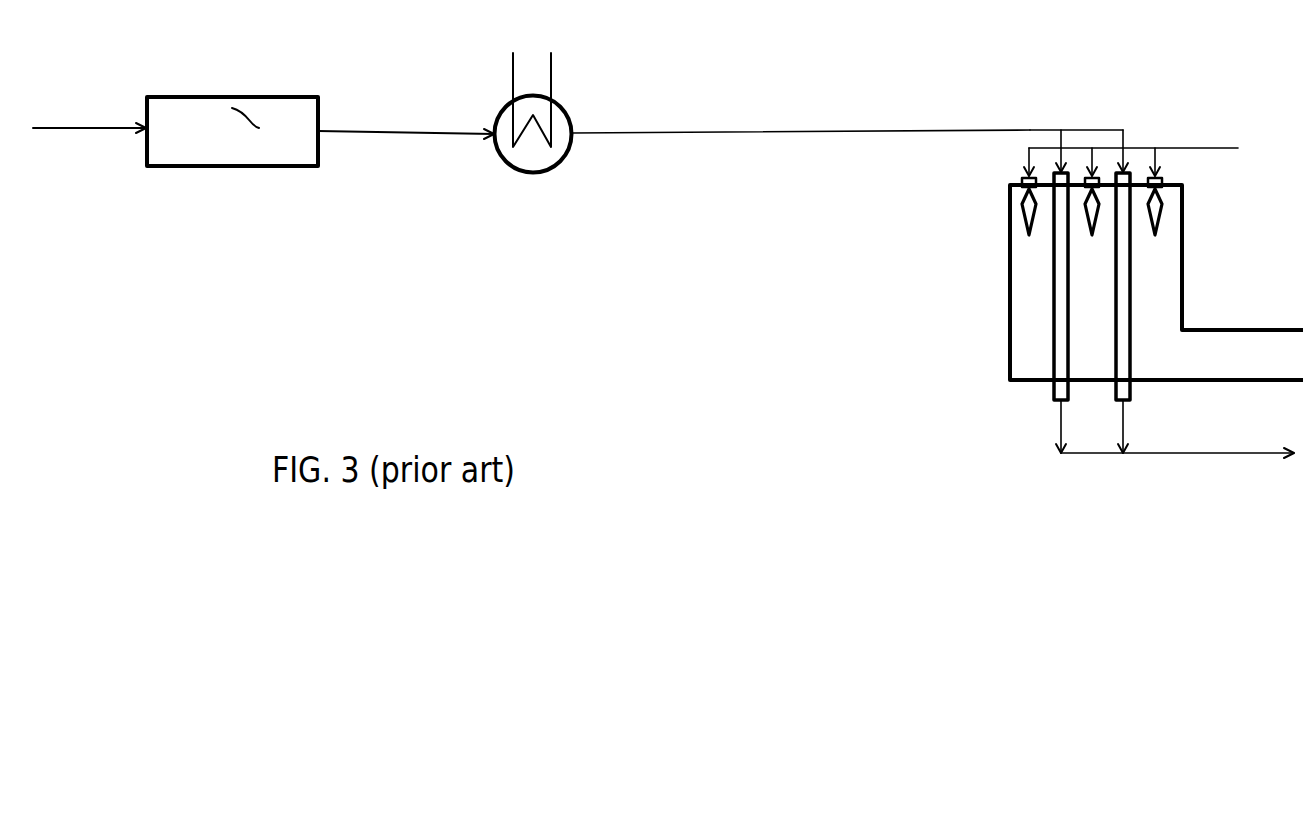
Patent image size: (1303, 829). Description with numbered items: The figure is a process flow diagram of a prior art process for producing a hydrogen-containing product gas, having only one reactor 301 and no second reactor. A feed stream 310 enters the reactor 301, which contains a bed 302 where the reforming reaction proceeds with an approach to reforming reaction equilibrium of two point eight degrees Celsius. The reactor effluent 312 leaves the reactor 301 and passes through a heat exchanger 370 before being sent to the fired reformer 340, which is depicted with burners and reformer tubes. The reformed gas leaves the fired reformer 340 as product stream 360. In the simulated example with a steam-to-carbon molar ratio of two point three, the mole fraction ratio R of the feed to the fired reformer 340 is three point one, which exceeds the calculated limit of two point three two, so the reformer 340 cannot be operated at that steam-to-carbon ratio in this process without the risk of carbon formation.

The reactor 301 is at (187, 96).
The catalyst bed 302 is at (253, 122).
The feed stream line 310 is at (102, 131).
The reactor effluent line 312 is at (334, 135).
The heat exchanger 370 is at (527, 183).
The fired reformer 340 is at (1030, 130).
The furnace product outlet line 360 is at (1173, 458).